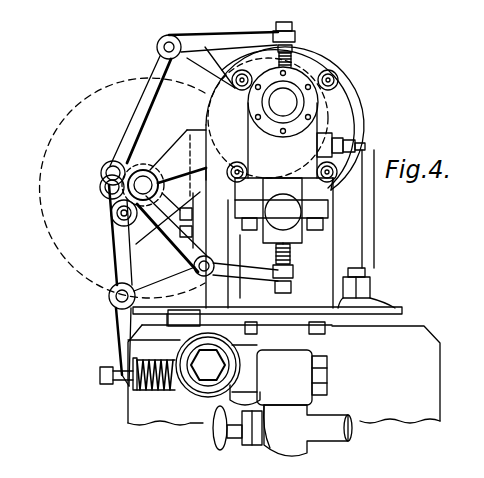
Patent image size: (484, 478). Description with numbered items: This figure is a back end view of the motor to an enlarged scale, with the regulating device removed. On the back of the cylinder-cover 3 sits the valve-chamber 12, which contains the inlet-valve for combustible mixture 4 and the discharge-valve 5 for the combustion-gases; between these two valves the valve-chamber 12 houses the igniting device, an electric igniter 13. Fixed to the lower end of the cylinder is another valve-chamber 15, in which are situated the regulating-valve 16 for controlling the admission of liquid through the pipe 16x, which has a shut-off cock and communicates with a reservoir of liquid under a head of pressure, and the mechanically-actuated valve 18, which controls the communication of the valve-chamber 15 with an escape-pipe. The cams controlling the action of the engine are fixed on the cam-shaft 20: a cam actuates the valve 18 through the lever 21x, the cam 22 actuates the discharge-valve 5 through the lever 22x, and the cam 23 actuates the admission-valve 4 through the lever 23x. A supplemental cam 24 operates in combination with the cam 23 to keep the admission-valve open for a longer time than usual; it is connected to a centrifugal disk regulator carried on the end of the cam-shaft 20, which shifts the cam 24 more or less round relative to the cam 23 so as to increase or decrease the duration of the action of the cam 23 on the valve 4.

The cylinder-cover 3 is at (345, 100).
The inlet-valve for combustible mixture 4 is at (292, 27).
The discharge-valve 5 is at (294, 264).
The valve-chamber 12 is at (280, 200).
The electric igniter 13 is at (333, 141).
The valve-chamber 15 is at (251, 369).
The regulating-valve 16 is at (213, 425).
The pipe 16x is at (341, 421).
The mechanically-actuated valve 18 is at (127, 386).
The cam-shaft 20 is at (142, 188).
The lever 21x is at (117, 327).
The cam 22 is at (137, 164).
The lever 22x is at (120, 248).
The cam 23 is at (196, 193).
The lever 23x is at (194, 99).
The supplemental cam 24 is at (175, 234).